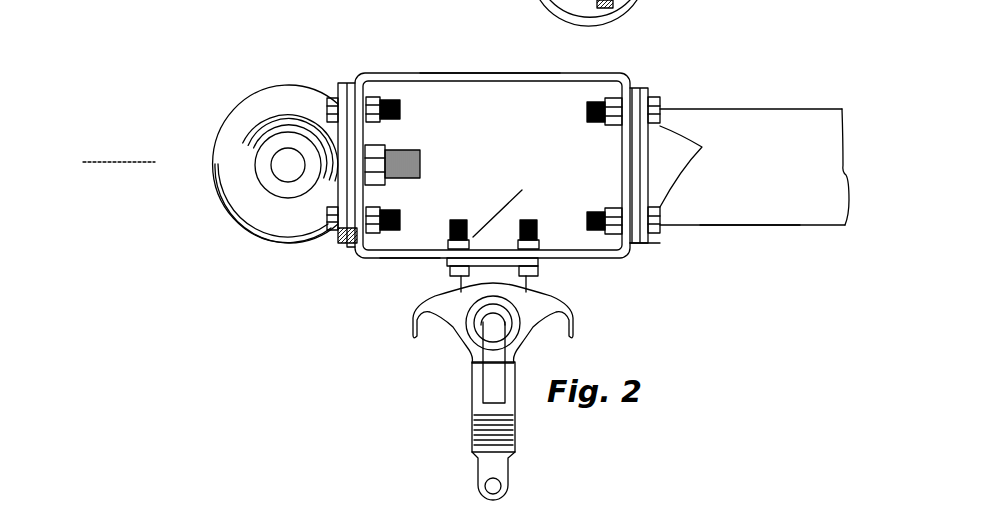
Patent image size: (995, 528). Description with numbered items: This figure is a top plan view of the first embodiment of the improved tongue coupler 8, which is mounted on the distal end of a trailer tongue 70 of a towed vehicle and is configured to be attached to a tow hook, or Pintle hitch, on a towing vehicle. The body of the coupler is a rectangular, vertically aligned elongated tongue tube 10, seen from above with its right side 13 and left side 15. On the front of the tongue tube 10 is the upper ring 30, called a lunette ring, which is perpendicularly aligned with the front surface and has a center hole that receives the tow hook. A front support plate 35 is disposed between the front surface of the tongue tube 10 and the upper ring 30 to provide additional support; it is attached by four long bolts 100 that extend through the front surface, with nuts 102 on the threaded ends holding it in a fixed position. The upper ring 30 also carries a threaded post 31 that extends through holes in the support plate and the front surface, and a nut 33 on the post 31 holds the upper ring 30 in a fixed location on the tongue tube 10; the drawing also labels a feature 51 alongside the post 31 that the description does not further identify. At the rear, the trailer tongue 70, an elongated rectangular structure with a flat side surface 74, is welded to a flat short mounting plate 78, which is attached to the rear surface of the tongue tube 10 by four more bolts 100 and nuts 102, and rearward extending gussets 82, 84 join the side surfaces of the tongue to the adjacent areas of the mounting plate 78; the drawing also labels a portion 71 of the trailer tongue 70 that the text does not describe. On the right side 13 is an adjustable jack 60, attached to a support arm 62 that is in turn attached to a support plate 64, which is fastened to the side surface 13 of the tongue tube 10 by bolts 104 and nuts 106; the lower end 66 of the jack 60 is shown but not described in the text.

The tongue coupler 8 is at (213, 58).
The tongue tube 10 is at (418, 73).
The right side 13 is at (403, 259).
The left side 15 is at (512, 73).
The upper ring 30 is at (215, 128).
The threaded post 31 is at (418, 160).
The axis 51 is at (115, 158).
The nut 33 is at (392, 186).
The front support plate 35 is at (333, 177).
The long bolts 100 is at (322, 99).
The nuts 102 is at (610, 98).
The bolts 104 is at (530, 222).
The nuts 106 is at (515, 241).
The support plate 64 is at (550, 262).
The support arm 62 is at (560, 293).
The adjustable jack 60 is at (467, 382).
The threaded eye 66 is at (517, 450).
The trailer tongue 70 is at (757, 107).
The arm end 71 is at (853, 163).
The side surface 74 is at (793, 227).
The mounting plate 78 is at (648, 88).
The gusset 82 is at (682, 233).
The gusset 84 is at (665, 106).